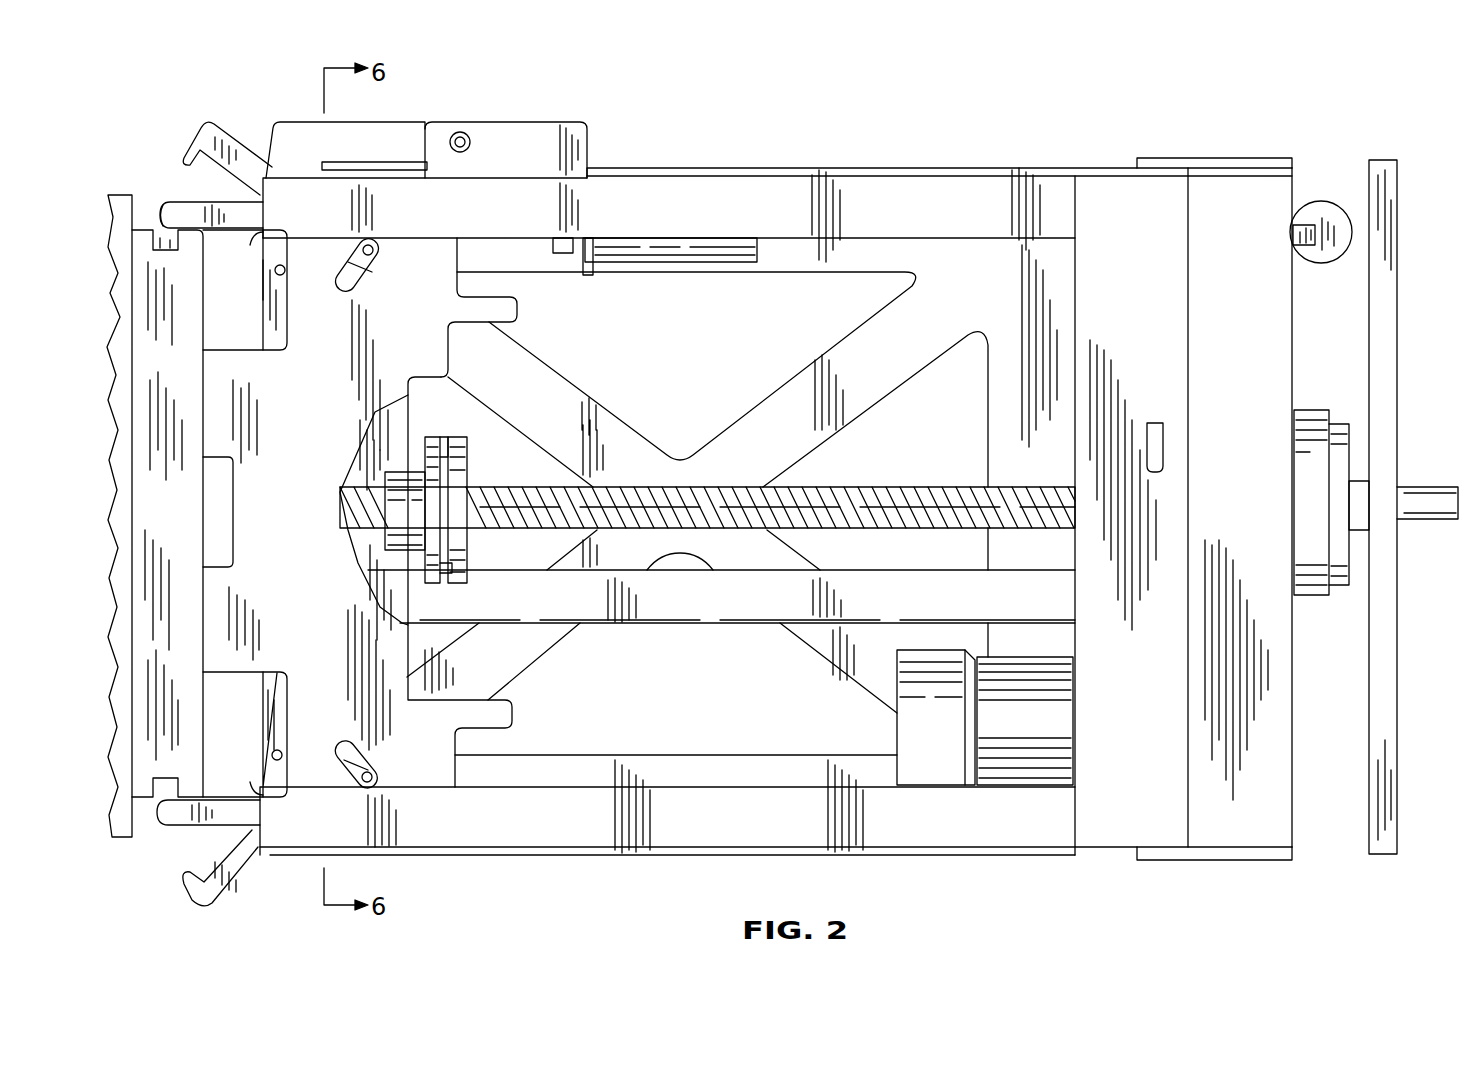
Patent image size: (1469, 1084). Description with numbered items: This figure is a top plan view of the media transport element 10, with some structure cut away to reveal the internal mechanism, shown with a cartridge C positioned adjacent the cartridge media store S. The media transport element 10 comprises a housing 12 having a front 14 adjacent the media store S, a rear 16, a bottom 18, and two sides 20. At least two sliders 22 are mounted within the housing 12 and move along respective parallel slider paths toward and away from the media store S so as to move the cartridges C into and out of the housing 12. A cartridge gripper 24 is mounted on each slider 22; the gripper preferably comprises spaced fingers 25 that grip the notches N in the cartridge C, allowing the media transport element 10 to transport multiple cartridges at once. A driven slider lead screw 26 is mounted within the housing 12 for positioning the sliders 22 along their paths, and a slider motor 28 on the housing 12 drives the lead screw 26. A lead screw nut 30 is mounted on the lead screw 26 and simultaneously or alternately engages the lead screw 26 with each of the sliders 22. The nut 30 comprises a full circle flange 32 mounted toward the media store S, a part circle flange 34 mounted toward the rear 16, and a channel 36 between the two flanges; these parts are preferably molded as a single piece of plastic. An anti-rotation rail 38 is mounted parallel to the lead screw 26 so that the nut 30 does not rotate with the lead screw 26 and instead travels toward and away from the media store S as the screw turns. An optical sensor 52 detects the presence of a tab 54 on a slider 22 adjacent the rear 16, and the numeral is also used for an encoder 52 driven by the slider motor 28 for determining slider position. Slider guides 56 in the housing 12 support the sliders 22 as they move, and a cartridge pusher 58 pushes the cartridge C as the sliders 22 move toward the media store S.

The media transport element 10 is at (1248, 877).
The housing 12 is at (1108, 853).
The front 14 is at (257, 832).
The rear 16 is at (1294, 762).
The bottom 18 is at (530, 650).
The sides 20 is at (773, 167).
The sliders 22 is at (232, 347).
The cartridge gripper 24 is at (192, 143).
The spaced fingers 25 is at (180, 200).
The slider lead screw 26 is at (887, 492).
The slider motor 28 is at (1312, 598).
The lead screw nut 30 is at (400, 503).
The full circle flange 32 is at (425, 513).
The part circle flange 34 is at (457, 467).
The channel 36 is at (447, 433).
The anti-rotation rail 38 is at (703, 625).
The optical sensor 52 is at (657, 252).
The tab 54 is at (1297, 237).
The slider guides 56 is at (420, 830).
The cartridge pusher 58 is at (220, 657).
The cartridge media store S is at (125, 193).
The notches N is at (163, 203).
The cartridge C is at (140, 790).